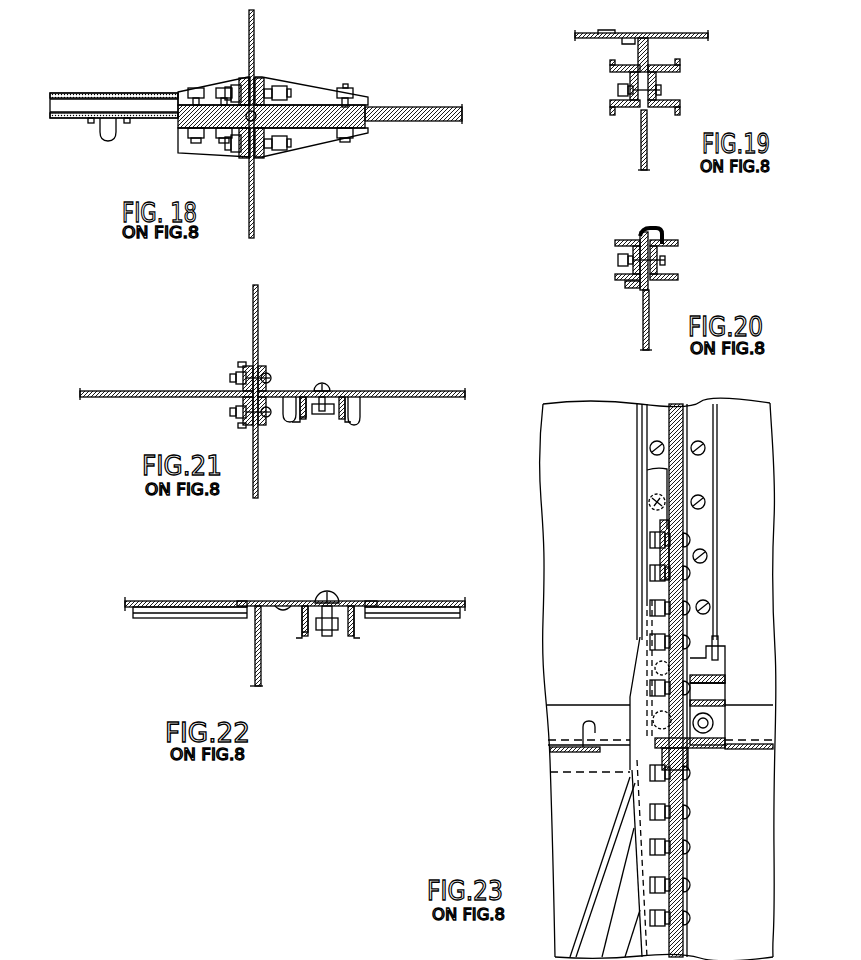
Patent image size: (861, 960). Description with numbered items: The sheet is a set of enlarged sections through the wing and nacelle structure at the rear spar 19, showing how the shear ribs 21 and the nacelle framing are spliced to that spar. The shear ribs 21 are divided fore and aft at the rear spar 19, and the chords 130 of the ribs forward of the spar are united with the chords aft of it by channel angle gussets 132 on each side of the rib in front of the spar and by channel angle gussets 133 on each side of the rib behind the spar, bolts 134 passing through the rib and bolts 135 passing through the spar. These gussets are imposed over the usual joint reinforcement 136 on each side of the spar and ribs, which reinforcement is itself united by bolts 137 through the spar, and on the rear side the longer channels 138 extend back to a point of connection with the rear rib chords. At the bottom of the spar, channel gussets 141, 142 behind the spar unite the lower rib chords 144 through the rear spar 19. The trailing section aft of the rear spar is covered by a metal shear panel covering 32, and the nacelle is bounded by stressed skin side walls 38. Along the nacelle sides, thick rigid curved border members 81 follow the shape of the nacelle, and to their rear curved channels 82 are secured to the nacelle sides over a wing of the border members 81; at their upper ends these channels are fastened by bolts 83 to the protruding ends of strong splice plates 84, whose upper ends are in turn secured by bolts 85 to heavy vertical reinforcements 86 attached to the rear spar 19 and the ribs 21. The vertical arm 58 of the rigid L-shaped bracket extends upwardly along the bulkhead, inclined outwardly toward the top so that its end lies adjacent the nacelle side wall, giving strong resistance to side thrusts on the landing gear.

In FIG. 18, the rear spar 19 is at (255, 30).
In FIG. 21, the rear spar 19 is at (258, 332).
In FIG. 18, the shear rib 21 is at (462, 111).
In FIG. 19, the shear rib 21 is at (641, 143).
In FIG. 20, the shear rib 21 is at (643, 333).
In FIG. 21, the shear rib 21 is at (150, 398).
In FIG. 23, the shear rib 21 is at (683, 438).
In FIG. 19, the metal shear panel covering 32 is at (680, 33).
In FIG. 22, the stressed skin side wall 38 is at (185, 601).
In FIG. 23, the vertical arm of L-shaped bracket 58 is at (611, 863).
In FIG. 22, the curved border member 81 is at (262, 630).
In FIG. 22, the curved channel 82 is at (360, 632).
In FIG. 23, the curved channel 82 is at (690, 956).
In FIG. 22, the bolt 83 is at (336, 592).
In FIG. 23, the bolt 83 is at (694, 862).
In FIG. 21, the splice plate 84 is at (306, 420).
In FIG. 22, the splice plate 84 is at (316, 636).
In FIG. 23, the splice plate 84 is at (636, 674).
In FIG. 21, the bolt 85 is at (328, 385).
In FIG. 23, the bolt 85 is at (697, 572).
In FIG. 21, the heavy vertical reinforcement 86 is at (356, 426).
In FIG. 23, the heavy vertical reinforcement 86 is at (670, 489).
In FIG. 18, the rib chord 130 is at (158, 120).
In FIG. 20, the rib chord 130 is at (636, 287).
In FIG. 18, the channel angle gusset 132 is at (222, 80).
In FIG. 20, the channel angle gusset 132 is at (616, 245).
In FIG. 18, the channel angle gusset 133 is at (304, 97).
In FIG. 19, the channel angle gusset 133 is at (630, 78).
In FIG. 18, the bolt 134 is at (194, 88).
In FIG. 19, the bolt 134 is at (618, 94).
In FIG. 18, the bolt 135 is at (278, 85).
In FIG. 21, the joint reinforcement 136 is at (245, 365).
In FIG. 23, the joint reinforcement 136 is at (637, 436).
In FIG. 21, the bolt 137 is at (268, 372).
In FIG. 19, the longer channel 138 is at (610, 68).
In FIG. 23, the channel gusset 141 is at (722, 660).
In FIG. 23, the channel gusset 142 is at (722, 692).
In FIG. 23, the lower rib chord 144 is at (700, 758).